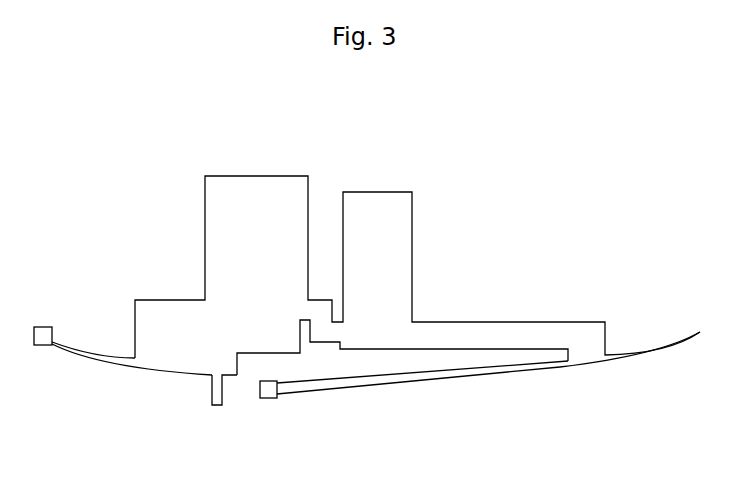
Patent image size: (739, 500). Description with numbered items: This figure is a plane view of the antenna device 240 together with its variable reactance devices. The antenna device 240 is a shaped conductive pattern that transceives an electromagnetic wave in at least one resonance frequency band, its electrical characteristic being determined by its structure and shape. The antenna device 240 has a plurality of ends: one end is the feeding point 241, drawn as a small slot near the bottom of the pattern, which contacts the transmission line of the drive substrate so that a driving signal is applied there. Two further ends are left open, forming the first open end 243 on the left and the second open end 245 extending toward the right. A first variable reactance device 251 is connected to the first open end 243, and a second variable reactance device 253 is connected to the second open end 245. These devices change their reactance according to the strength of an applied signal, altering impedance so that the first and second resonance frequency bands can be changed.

The antenna device 240 is at (378, 162).
The feeding point 241 is at (217, 410).
The first open end 243 is at (87, 357).
The second open end 245 is at (340, 387).
The first variable reactance device 251 is at (45, 347).
The second variable reactance device 253 is at (270, 398).